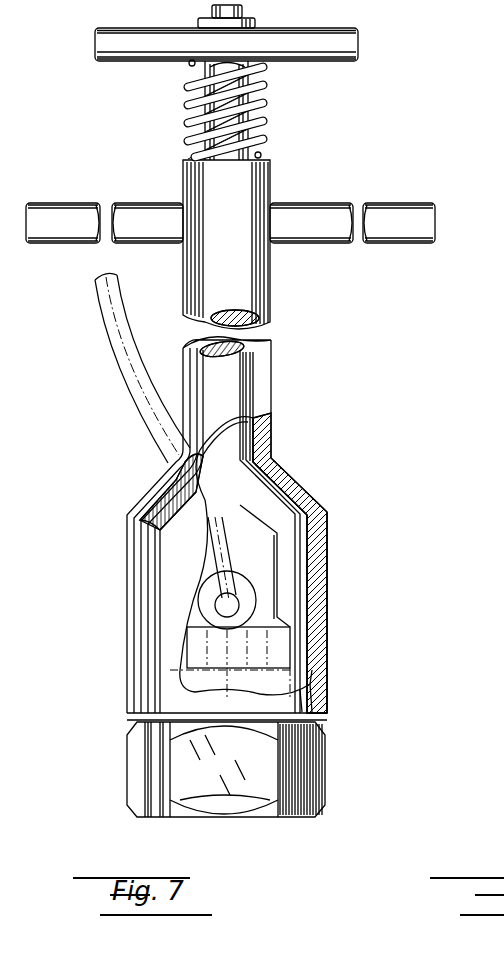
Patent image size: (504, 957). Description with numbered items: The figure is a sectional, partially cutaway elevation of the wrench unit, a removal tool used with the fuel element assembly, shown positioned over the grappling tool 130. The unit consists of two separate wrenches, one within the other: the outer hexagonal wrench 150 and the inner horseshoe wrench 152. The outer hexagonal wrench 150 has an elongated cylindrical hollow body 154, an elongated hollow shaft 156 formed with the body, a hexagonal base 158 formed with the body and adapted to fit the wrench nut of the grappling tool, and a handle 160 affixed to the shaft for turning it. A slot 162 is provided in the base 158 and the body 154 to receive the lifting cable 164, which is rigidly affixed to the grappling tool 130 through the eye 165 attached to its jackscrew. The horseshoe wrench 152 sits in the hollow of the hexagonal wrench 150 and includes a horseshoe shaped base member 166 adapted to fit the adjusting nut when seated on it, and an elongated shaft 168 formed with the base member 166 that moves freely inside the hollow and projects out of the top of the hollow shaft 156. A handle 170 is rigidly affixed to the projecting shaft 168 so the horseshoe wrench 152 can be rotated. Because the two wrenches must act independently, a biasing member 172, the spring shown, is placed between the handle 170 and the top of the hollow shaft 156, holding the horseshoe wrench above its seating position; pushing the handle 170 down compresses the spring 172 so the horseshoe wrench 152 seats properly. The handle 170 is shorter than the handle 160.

The handle 170 is at (352, 30).
The biasing member 172 is at (264, 103).
The handle 160 is at (313, 203).
The lifting cable 164 is at (132, 370).
The hollow shaft 156 is at (263, 378).
The shaft 168 is at (230, 452).
The slot 162 is at (137, 503).
The outer hexagonal wrench 150 is at (347, 544).
The inner horseshoe wrench 152 is at (300, 598).
The elongated cylindrical hollow body 154 is at (323, 637).
The horseshoe shaped base member 166 is at (193, 645).
The grappling tool 130 is at (301, 684).
The eye 165 is at (235, 578).
The hexagonal base 158 is at (317, 750).